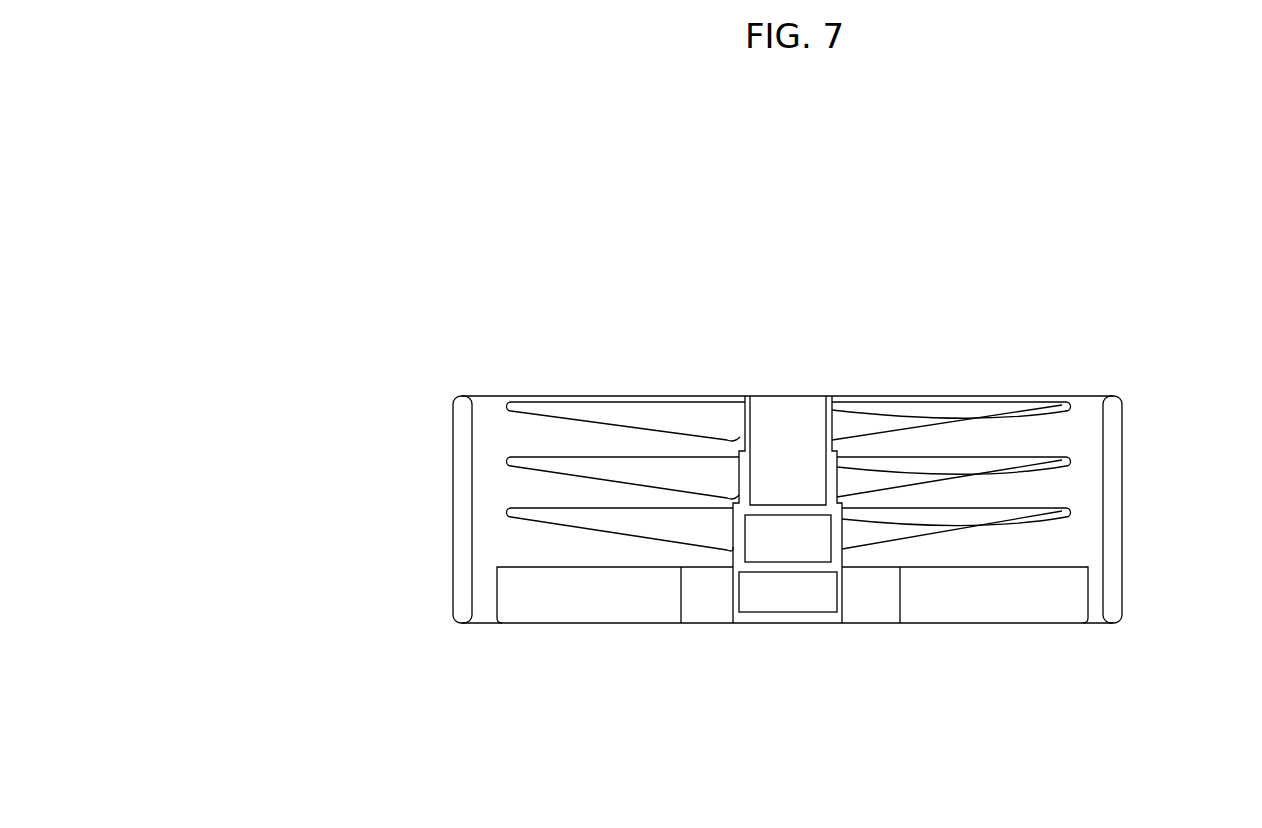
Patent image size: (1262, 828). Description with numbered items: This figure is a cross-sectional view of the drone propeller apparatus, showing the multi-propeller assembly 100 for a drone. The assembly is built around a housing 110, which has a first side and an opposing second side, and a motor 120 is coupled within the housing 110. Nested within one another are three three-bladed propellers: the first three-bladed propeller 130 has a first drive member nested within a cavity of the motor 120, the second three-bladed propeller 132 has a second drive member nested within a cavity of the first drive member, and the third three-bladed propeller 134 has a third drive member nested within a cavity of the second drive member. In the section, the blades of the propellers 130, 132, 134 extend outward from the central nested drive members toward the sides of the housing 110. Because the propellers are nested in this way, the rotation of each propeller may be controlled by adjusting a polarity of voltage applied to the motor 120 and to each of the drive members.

The multi-propeller assembly 100 is at (250, 154).
The housing 110 is at (455, 483).
The motor 120 is at (1018, 615).
The first three-bladed propeller 130 is at (1065, 514).
The second three-bladed propeller 132 is at (1065, 463).
The third three-bladed propeller 134 is at (1065, 404).